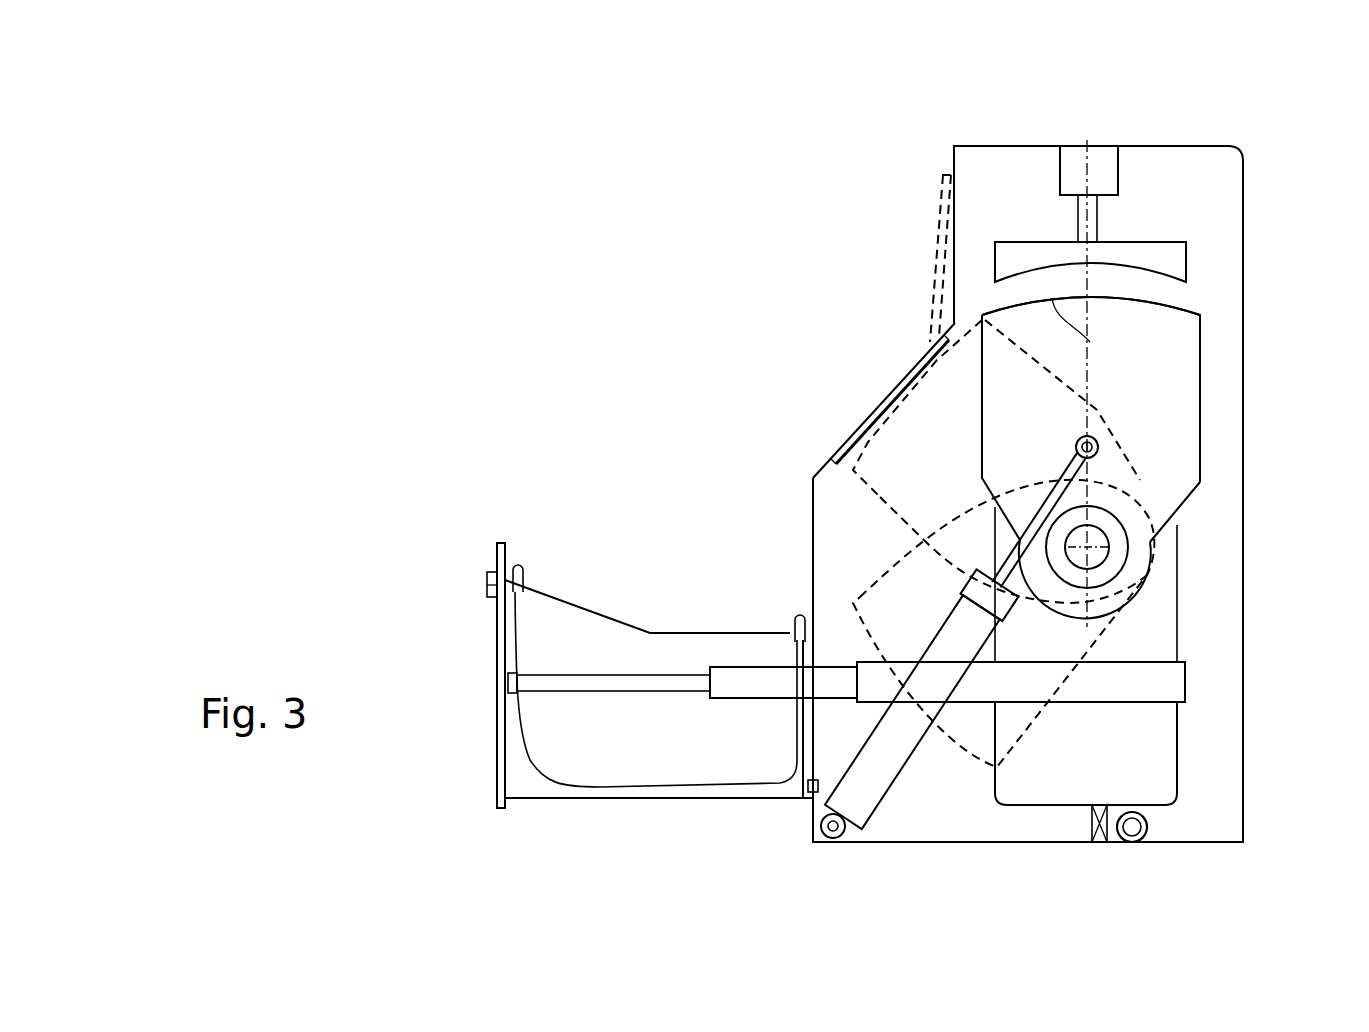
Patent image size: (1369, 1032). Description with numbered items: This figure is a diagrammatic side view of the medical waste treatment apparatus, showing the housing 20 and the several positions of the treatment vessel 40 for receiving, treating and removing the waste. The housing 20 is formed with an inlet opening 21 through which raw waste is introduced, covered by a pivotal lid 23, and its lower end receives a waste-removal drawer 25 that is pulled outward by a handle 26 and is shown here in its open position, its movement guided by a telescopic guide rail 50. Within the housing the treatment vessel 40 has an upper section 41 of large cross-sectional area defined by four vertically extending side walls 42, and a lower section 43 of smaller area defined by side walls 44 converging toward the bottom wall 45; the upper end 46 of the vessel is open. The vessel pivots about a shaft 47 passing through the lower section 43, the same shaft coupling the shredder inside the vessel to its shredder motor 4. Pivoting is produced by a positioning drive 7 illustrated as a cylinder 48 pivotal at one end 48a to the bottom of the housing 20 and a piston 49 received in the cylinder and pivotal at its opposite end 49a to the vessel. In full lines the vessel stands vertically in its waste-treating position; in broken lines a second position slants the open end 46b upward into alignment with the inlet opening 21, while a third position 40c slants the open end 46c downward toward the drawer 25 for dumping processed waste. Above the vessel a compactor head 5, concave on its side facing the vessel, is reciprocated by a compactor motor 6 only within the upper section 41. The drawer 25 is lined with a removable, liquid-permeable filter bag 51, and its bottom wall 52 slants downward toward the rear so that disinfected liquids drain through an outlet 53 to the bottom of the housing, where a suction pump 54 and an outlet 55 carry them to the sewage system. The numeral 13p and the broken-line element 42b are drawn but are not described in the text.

The shredder motor 4 is at (1158, 773).
The compactor head 5 is at (1160, 260).
The compactor motor 6 is at (1107, 165).
The positioning drive 7 is at (900, 752).
The adjusting spindle 13p is at (1080, 242).
The housing 20 is at (1248, 247).
The inlet opening 21 is at (822, 446).
The pivotal lid 23 is at (893, 375).
The waste-removal drawer 25 is at (495, 763).
The handle 26 is at (486, 585).
The treatment vessel 40 is at (1207, 337).
The third position of treatment vessel 40c is at (858, 597).
The upper section 41 is at (1148, 361).
The side walls 42 is at (982, 447).
The side plate in pivoted position 42b is at (878, 498).
The lower section 43 is at (1127, 535).
The converging side walls 44 is at (1199, 494).
The bottom wall 45 is at (1117, 603).
The upper end 46 is at (1080, 335).
The open end in second position 46b is at (860, 443).
The open end in third position 46c is at (868, 642).
The shaft 47 is at (1102, 556).
The cylinder 48 is at (919, 754).
The cylinder pivot end 48a is at (845, 843).
The piston 49 is at (1093, 468).
The piston pivot end 49a is at (1100, 435).
The telescopic guide rail 50 is at (737, 685).
The removable filter bag 51 is at (517, 568).
The slanted bottom wall 52 is at (765, 803).
The outlet 53 is at (812, 795).
The suction pump 54 is at (1100, 838).
The outlet 55 is at (1140, 842).